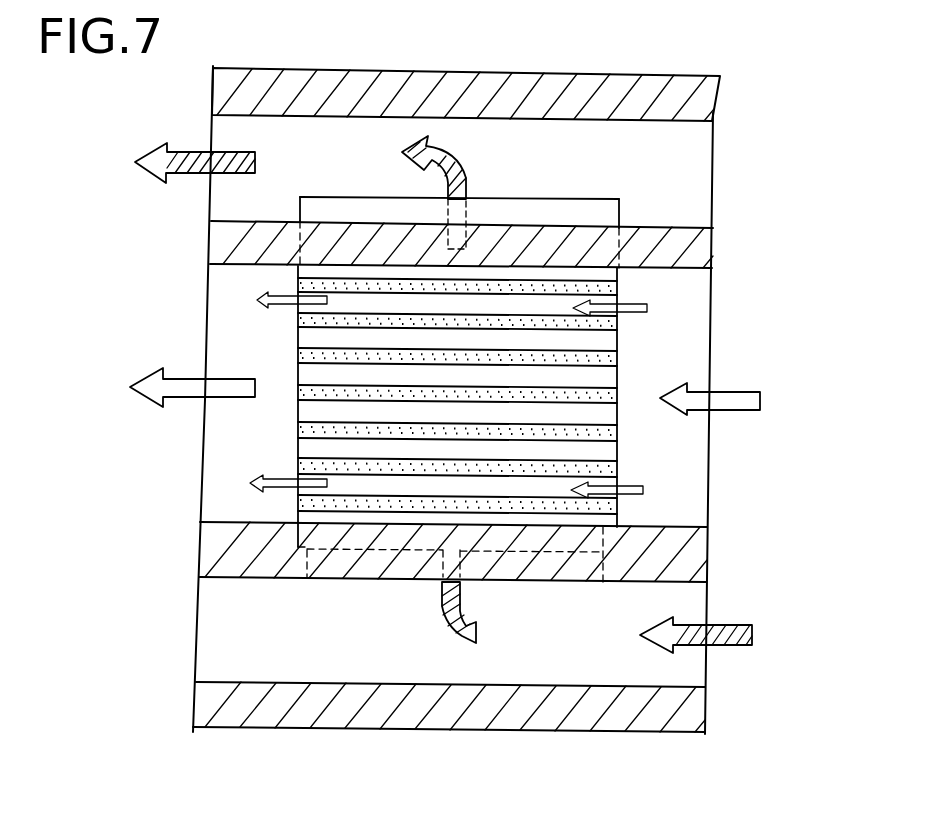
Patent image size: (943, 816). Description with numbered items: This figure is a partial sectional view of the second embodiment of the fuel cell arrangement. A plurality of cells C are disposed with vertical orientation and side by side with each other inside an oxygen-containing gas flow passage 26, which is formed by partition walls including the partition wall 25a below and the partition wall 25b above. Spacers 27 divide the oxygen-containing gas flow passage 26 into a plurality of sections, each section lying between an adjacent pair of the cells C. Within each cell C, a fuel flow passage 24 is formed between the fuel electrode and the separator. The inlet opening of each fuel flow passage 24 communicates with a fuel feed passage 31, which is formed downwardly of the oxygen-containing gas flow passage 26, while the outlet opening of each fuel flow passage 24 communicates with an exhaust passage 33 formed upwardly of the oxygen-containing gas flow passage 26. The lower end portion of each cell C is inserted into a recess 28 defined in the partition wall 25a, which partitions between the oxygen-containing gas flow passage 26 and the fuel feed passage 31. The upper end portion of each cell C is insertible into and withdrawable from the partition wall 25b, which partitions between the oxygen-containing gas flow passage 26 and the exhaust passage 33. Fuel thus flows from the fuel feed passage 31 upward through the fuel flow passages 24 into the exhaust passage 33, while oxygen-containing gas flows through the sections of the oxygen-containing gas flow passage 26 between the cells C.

The fuel flow passage 24 is at (478, 628).
The partition wall 25a is at (698, 527).
The partition wall 25b is at (697, 227).
The oxygen-containing gas flow passage 26 is at (602, 379).
The spacer 27 is at (298, 353).
The recess 28 is at (455, 537).
The fuel feed passage 31 is at (430, 656).
The exhaust passage 33 is at (477, 192).
The cell C is at (622, 325).